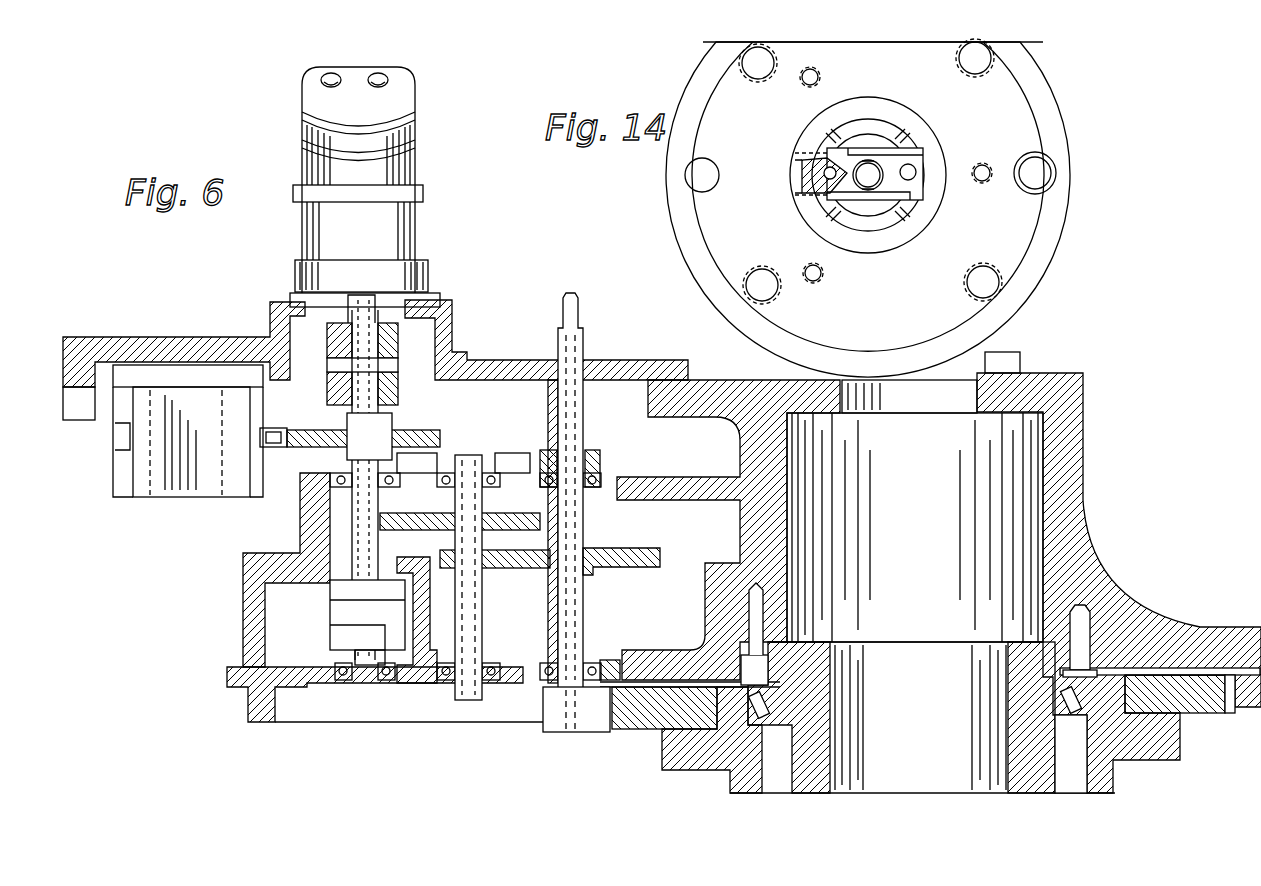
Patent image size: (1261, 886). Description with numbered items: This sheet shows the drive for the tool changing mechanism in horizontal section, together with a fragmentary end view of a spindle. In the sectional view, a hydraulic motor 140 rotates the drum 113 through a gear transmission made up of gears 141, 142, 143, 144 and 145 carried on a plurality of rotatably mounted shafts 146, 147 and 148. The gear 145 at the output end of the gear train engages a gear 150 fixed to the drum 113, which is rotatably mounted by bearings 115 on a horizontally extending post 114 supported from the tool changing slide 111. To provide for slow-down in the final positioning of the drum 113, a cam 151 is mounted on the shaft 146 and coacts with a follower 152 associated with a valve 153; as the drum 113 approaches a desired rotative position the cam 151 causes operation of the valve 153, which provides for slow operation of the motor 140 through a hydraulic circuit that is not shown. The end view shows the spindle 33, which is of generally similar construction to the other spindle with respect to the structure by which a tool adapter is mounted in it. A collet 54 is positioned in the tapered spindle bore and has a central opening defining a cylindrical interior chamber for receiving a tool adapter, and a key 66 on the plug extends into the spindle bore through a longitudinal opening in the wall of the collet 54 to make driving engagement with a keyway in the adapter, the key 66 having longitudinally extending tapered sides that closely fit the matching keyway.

In FIG. 14, the spindle 33 is at (1055, 122).
In FIG. 14, the collet 54 is at (918, 208).
In FIG. 14, the key 66 is at (825, 150).
In FIG. 6, the tool changing slide 111 is at (1083, 453).
In FIG. 6, the drum 113 is at (1112, 784).
In FIG. 6, the post 114 is at (1033, 783).
In FIG. 6, the bearings 115 is at (1072, 720).
In FIG. 6, the hydraulic motor 140 is at (307, 228).
In FIG. 6, the gear 141 is at (345, 527).
In FIG. 6, the gear 142 is at (460, 535).
In FIG. 6, the gear 143 is at (488, 568).
In FIG. 6, the gear 144 is at (640, 541).
In FIG. 6, the gear 145 is at (560, 722).
In FIG. 6, the shaft 146 is at (343, 575).
In FIG. 6, the shaft 147 is at (485, 627).
In FIG. 6, the shaft 148 is at (592, 640).
In FIG. 6, the gear 150 is at (644, 720).
In FIG. 6, the cam 151 is at (430, 430).
In FIG. 6, the follower 152 is at (278, 428).
In FIG. 6, the valve 153 is at (191, 497).